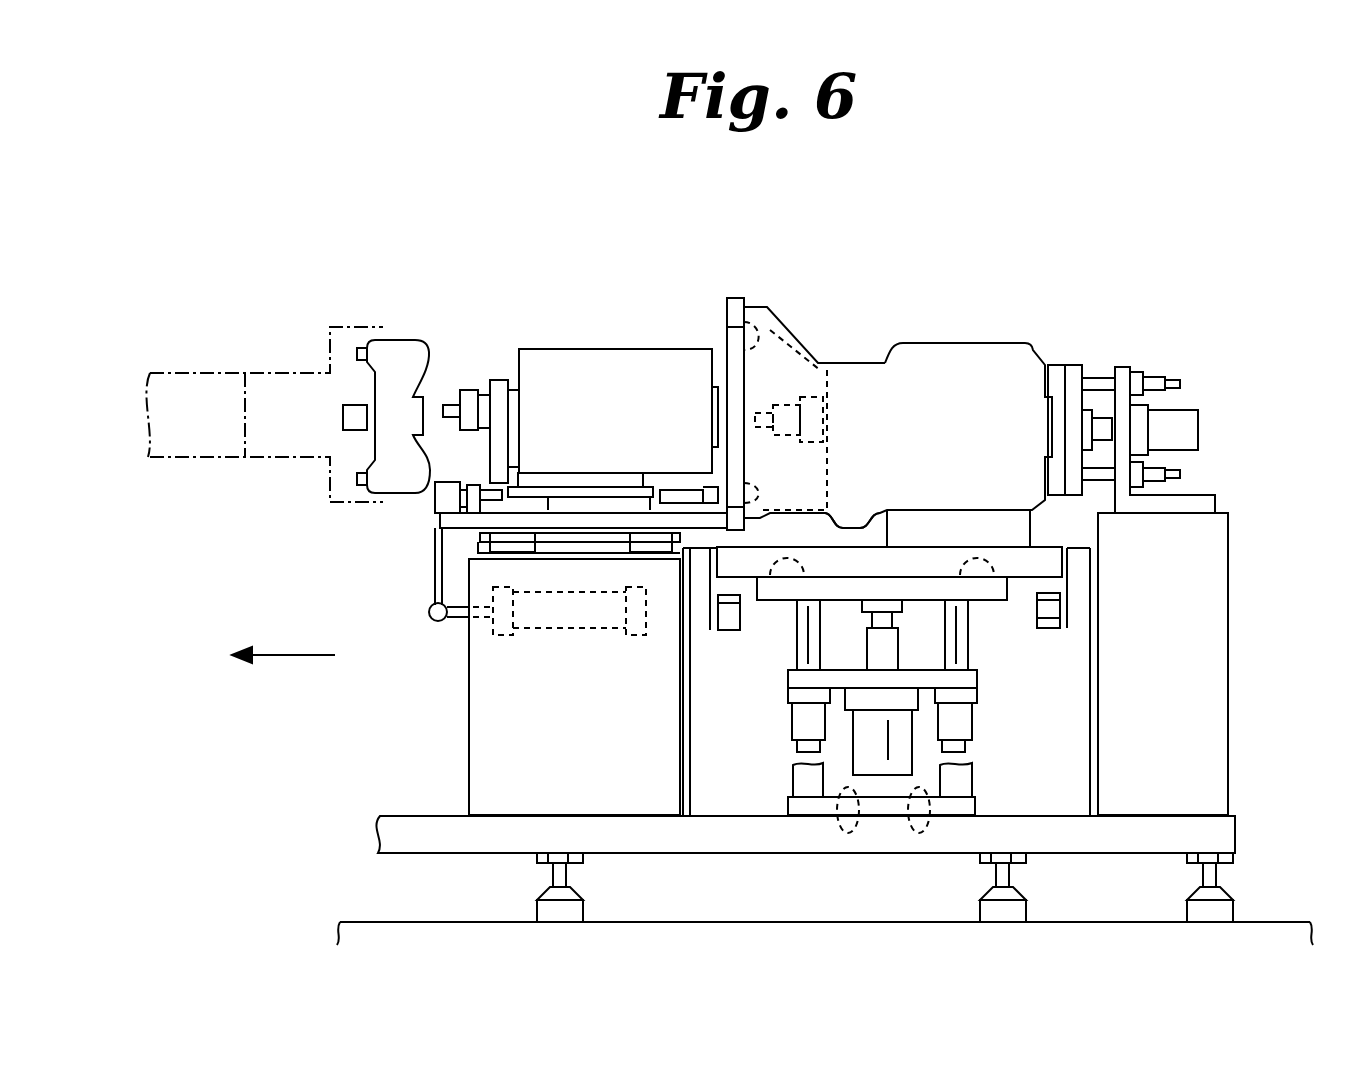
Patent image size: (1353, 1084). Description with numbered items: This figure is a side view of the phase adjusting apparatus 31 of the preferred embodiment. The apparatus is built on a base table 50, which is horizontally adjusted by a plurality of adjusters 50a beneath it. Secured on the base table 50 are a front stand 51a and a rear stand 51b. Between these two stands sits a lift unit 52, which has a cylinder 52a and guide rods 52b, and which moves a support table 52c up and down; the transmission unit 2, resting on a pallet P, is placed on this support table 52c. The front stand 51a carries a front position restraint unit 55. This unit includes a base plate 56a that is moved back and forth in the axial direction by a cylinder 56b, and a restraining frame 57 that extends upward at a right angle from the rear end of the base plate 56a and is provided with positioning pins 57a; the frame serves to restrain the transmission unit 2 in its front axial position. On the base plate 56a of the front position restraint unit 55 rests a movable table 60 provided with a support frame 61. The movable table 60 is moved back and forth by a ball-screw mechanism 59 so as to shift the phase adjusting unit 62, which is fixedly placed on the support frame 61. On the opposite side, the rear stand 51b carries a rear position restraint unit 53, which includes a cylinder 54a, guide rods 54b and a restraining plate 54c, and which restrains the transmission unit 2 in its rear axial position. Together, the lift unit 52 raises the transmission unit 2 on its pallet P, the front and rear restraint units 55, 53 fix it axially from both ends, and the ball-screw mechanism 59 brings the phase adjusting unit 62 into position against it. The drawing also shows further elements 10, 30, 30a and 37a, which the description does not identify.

The transmission unit 2 is at (970, 330).
The workpiece 10 is at (430, 335).
The guide rail 30 is at (1056, 648).
The slider 30a is at (740, 617).
The phase adjusting apparatus 31 is at (1120, 360).
The transfer arm 37a is at (330, 338).
The base table 50 is at (398, 830).
The adjuster 50a is at (553, 874).
The front stand 51a is at (487, 714).
The rear stand 51b is at (1230, 648).
The lift unit 52 is at (893, 725).
The cylinder 52a is at (944, 731).
The guide rods 52b is at (790, 718).
The support table 52c is at (853, 540).
The rear position restraint unit 53 is at (1093, 348).
The cylinder 54a is at (1193, 413).
The guide rods 54b is at (1108, 375).
The restraining plate 54c is at (1062, 363).
The front position restraint unit 55 is at (580, 538).
The base plate 56a is at (456, 530).
The cylinder 56b is at (592, 630).
The restraining frame 57 is at (735, 297).
The positioning pins 57a is at (772, 330).
The ball-screw mechanism 59 is at (425, 518).
The movable table 60 is at (557, 486).
The support frame 61 is at (622, 478).
The phase adjusting unit 62 is at (620, 349).
The pallet P is at (930, 545).